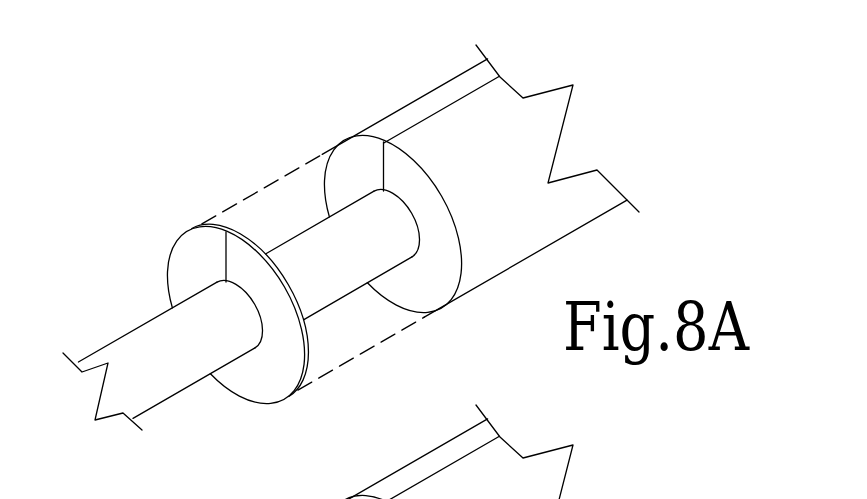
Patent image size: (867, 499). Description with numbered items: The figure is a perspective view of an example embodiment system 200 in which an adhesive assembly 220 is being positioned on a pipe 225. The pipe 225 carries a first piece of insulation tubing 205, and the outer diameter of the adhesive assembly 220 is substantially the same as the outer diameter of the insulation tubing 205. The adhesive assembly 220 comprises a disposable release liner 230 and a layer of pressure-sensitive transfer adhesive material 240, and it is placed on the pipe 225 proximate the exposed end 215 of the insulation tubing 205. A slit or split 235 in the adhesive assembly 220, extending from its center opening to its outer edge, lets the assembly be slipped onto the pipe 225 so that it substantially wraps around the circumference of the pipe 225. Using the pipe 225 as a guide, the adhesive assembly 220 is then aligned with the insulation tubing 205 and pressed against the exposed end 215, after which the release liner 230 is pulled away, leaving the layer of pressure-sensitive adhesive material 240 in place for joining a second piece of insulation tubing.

The system 200 is at (221, 104).
The insulation tubing 205 is at (467, 130).
The exposed end 215 is at (428, 270).
The adhesive assembly 220 is at (166, 225).
The pipe 225 is at (138, 348).
The release liner 230 is at (258, 377).
The slit or split 235 is at (250, 240).
The layer of pressure-sensitive adhesive material 240 is at (307, 353).